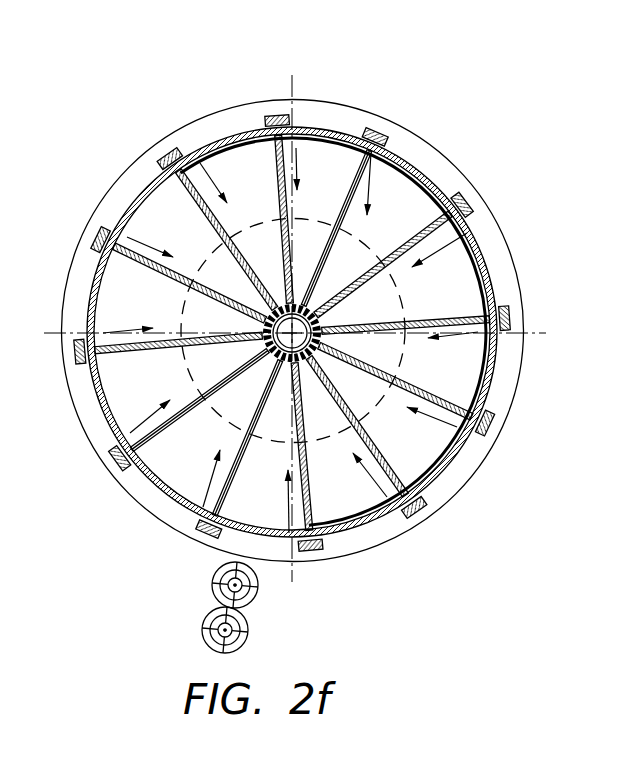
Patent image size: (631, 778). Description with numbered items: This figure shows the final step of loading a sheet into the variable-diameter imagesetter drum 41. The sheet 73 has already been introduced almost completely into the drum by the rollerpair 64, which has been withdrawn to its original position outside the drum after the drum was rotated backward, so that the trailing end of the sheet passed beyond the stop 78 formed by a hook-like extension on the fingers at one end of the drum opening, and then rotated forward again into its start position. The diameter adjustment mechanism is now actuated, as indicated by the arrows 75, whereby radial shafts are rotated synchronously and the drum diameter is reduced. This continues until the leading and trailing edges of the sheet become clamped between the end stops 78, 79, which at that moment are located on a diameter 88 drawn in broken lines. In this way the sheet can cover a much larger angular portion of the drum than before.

The drum 41 is at (423, 118).
The sheet 73 is at (323, 143).
The arrows 75 is at (437, 250).
The diameter 88 is at (403, 346).
The end stop 79 is at (216, 516).
The stop 78 is at (280, 522).
The rollerpair 64 is at (185, 617).